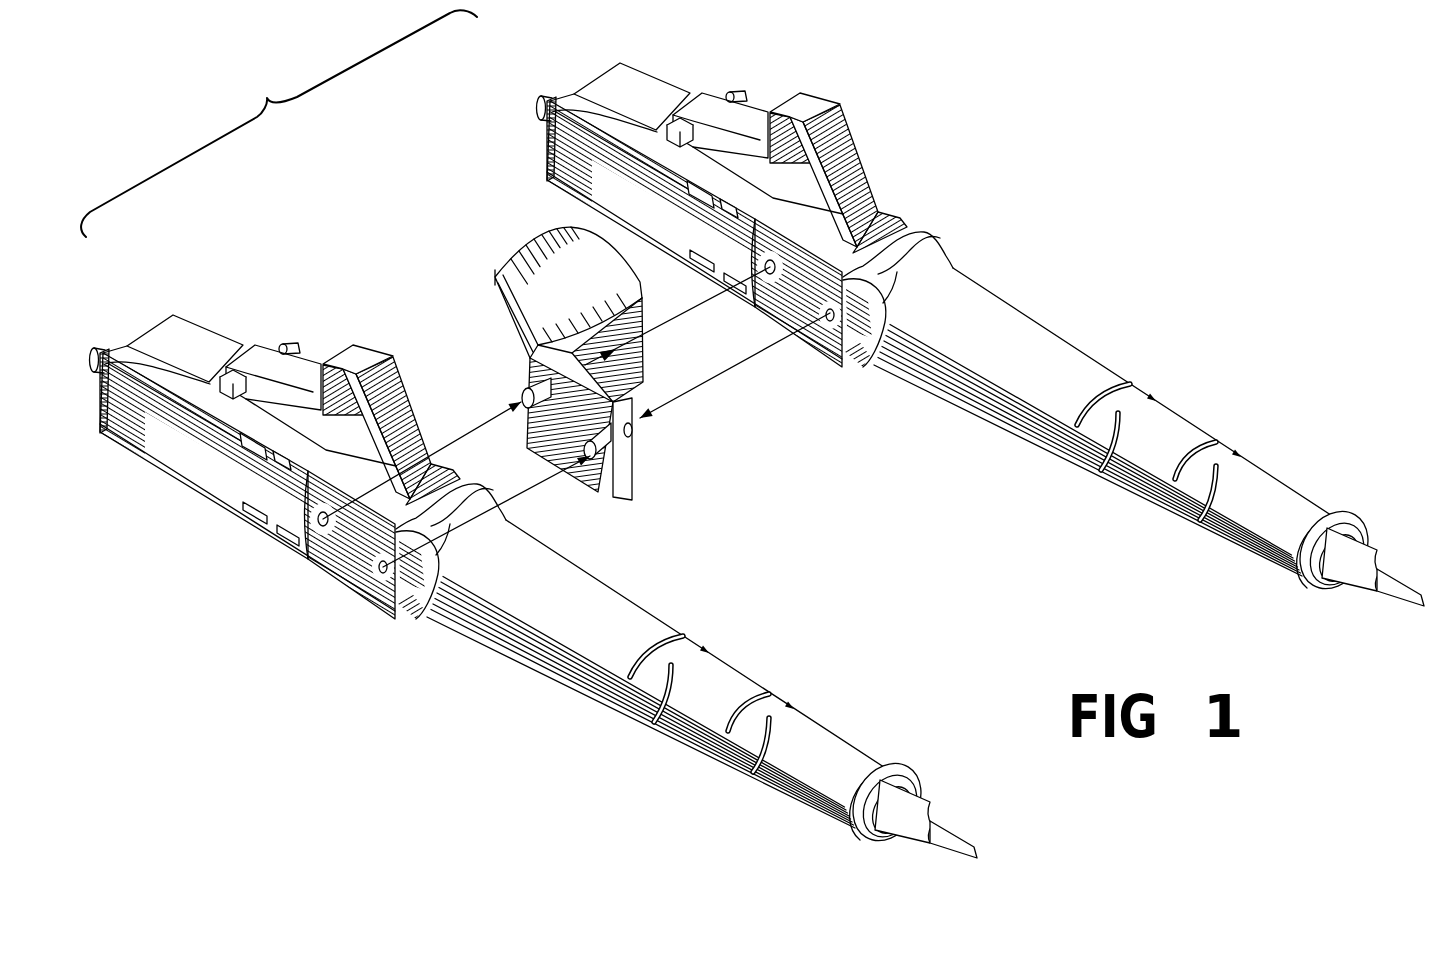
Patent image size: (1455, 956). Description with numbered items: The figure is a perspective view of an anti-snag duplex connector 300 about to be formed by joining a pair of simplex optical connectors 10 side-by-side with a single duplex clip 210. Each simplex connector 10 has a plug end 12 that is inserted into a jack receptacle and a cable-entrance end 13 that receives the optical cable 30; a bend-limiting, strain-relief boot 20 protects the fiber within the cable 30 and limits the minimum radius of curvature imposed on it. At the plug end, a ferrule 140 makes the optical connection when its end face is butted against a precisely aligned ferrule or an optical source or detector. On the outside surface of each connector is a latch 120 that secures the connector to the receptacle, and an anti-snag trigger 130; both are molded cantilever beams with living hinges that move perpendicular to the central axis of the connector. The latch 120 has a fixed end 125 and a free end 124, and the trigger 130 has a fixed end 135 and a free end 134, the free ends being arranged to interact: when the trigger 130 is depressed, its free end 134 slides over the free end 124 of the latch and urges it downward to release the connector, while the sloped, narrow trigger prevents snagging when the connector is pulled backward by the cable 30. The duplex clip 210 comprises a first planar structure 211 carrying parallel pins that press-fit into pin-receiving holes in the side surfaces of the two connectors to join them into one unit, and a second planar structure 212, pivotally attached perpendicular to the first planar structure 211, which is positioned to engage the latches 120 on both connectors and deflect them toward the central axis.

The simplex optical connector 10 is at (764, 440).
The plug end 12 is at (533, 157).
The cable-entrance end 13 is at (843, 381).
The bend-limiting, strain-relief boot 20 is at (1048, 331).
The optical cable 30 is at (1376, 549).
The latch 120 is at (707, 90).
The free end of latch 124 is at (763, 113).
The fixed end of latch 125 is at (632, 78).
The anti-snag trigger 130 is at (860, 153).
The free end of trigger 134 is at (833, 110).
The fixed end of trigger 135 is at (883, 213).
The ferrule 140 is at (537, 105).
The duplex clip 210 is at (493, 273).
The first planar structure 211 is at (615, 467).
The second planar structure 212 is at (520, 287).
The anti-snag duplex connector 300 is at (279, 123).